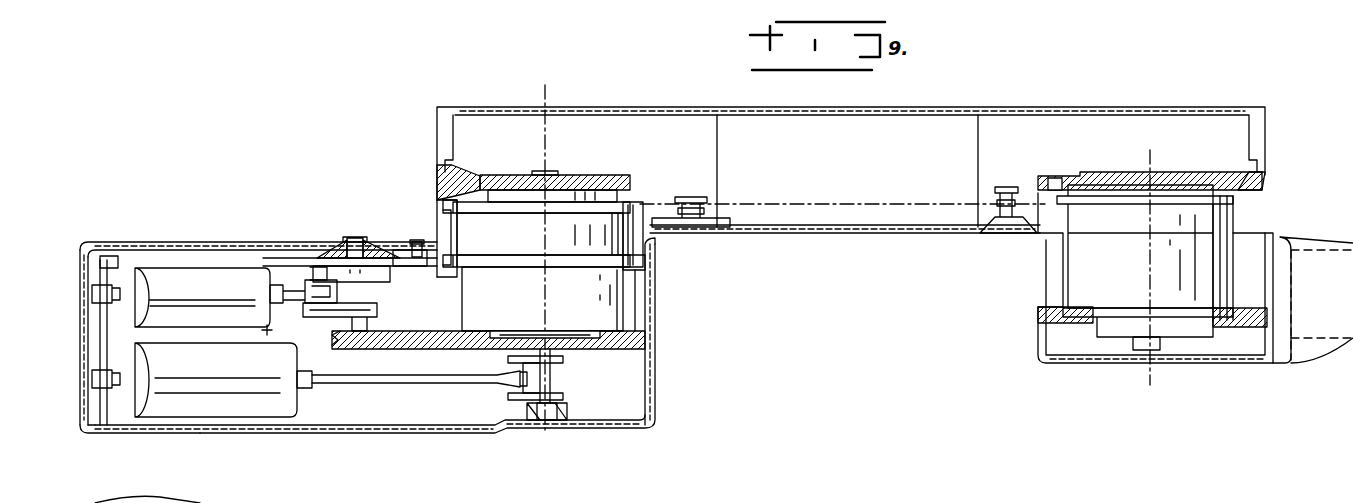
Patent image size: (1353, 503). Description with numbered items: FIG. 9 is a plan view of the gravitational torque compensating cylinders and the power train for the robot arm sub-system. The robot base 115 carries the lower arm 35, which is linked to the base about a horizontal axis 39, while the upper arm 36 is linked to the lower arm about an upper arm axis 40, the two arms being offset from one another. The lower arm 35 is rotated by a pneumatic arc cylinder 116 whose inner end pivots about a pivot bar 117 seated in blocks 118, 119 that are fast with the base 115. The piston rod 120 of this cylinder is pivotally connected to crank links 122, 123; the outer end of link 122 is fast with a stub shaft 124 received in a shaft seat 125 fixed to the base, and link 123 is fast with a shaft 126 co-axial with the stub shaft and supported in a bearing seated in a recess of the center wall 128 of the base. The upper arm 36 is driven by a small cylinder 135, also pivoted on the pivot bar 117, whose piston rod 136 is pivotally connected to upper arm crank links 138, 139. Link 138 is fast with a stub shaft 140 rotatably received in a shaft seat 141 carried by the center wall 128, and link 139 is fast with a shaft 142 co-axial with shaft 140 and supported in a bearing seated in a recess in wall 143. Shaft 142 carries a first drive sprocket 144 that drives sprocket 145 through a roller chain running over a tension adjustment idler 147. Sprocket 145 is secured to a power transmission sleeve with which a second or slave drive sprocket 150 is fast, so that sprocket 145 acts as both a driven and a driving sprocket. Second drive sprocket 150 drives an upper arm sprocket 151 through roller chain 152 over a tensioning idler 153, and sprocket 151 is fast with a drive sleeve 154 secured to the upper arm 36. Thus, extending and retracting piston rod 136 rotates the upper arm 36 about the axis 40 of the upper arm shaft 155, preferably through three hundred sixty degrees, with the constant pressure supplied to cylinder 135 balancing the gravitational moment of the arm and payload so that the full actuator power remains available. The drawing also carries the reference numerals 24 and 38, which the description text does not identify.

The support rail 24 is at (979, 101).
The lower arm 35 is at (856, 231).
The upper arm 36 is at (1313, 315).
The switch contact 38 is at (272, 330).
The horizontal axis 39 is at (548, 99).
The upper arm axis 40 is at (1152, 372).
The robot base 115 is at (302, 433).
The pneumatic arc cylinder 116 is at (233, 400).
The pivot bar 117 is at (105, 268).
The block 118 is at (100, 432).
The block 119 is at (103, 248).
The piston rod 120 is at (438, 388).
The crank link 122 is at (565, 396).
The crank link 123 is at (565, 359).
The stub shaft 124 is at (553, 418).
The shaft seat 125 is at (531, 420).
The shaft 126 is at (547, 331).
The center wall 128 is at (652, 340).
The small cylinder 135 is at (163, 275).
The piston rod 136 is at (270, 289).
The upper arm crank link 138 is at (353, 304).
The upper arm crank link 139 is at (341, 242).
The stub shaft 140 is at (372, 318).
The shaft seat 141 is at (337, 345).
The shaft 142 is at (355, 240).
The wall 143 is at (216, 242).
The first drive sprocket 144 is at (268, 258).
The sprocket 145 is at (650, 265).
The tension adjustment idler 147 is at (417, 268).
The second drive sprocket 150 is at (632, 200).
The upper arm sprocket 151 is at (1256, 204).
The roller chain 152 is at (804, 207).
The tensioning idler 153 is at (992, 190).
The drive sleeve 154 is at (1093, 223).
The upper arm shaft 155 is at (1160, 175).